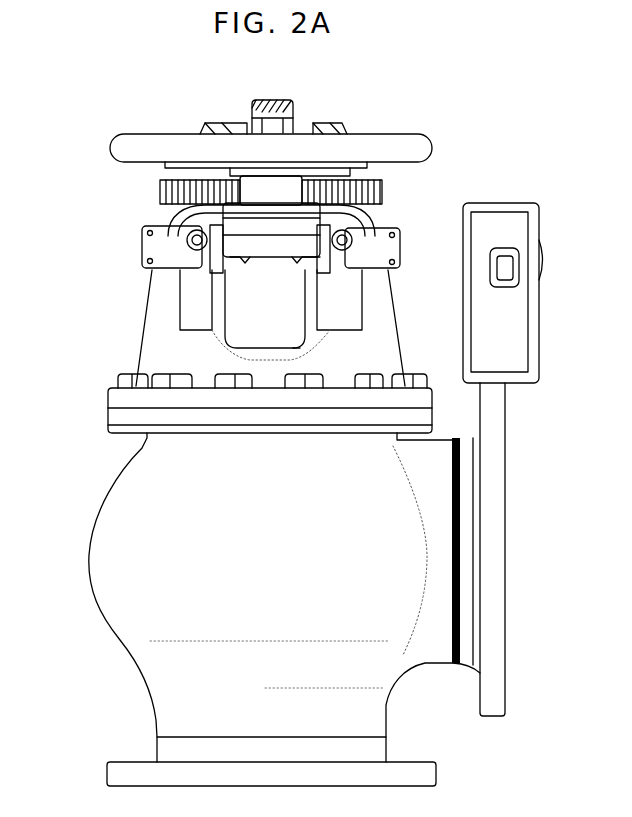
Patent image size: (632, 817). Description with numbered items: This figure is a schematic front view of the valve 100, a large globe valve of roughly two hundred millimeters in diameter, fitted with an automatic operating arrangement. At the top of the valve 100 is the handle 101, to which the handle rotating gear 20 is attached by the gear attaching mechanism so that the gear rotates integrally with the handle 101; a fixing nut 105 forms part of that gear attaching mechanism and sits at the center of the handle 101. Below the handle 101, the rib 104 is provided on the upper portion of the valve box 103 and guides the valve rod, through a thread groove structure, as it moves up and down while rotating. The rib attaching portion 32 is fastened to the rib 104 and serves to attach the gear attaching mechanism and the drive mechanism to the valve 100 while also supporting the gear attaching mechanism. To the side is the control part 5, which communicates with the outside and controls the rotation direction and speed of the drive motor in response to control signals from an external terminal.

The valve 100 is at (93, 467).
The handle 101 is at (385, 150).
The valve box 103 is at (135, 555).
The rib 104 is at (160, 343).
The fixing nut 105 is at (295, 120).
The handle rotating gear 20 is at (160, 188).
The rib attaching portion 32 is at (402, 240).
The control part 5 is at (512, 222).